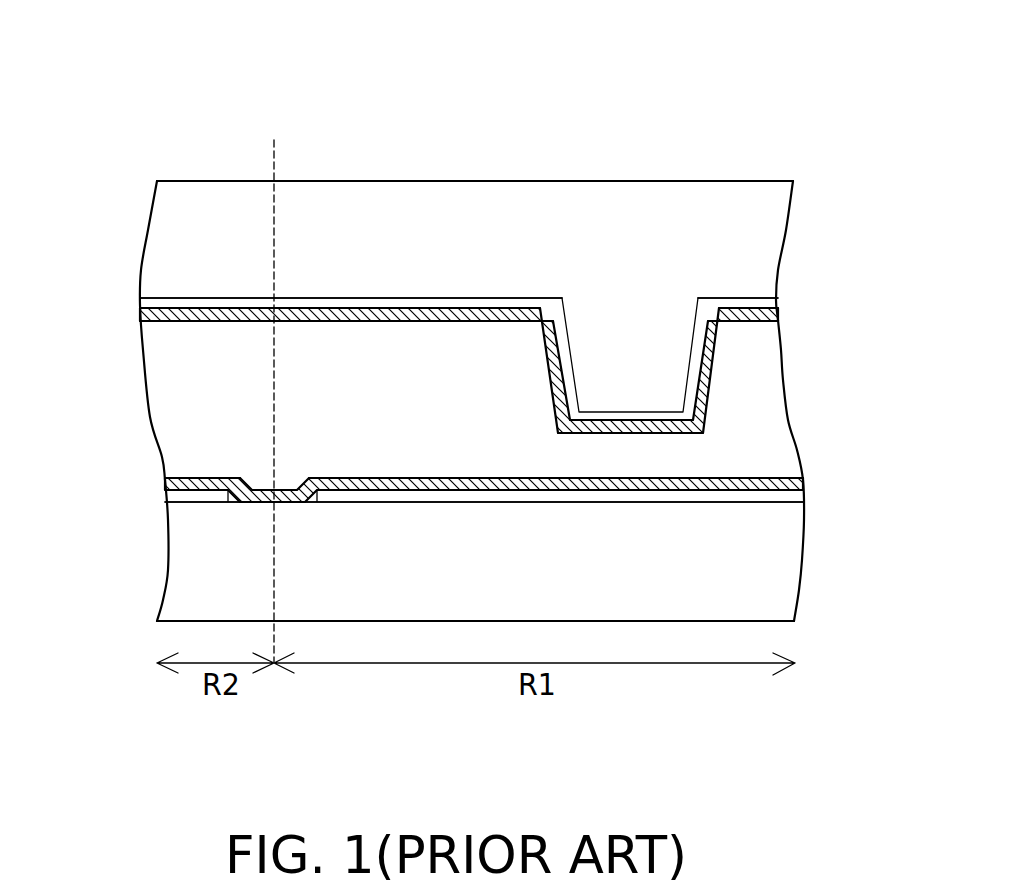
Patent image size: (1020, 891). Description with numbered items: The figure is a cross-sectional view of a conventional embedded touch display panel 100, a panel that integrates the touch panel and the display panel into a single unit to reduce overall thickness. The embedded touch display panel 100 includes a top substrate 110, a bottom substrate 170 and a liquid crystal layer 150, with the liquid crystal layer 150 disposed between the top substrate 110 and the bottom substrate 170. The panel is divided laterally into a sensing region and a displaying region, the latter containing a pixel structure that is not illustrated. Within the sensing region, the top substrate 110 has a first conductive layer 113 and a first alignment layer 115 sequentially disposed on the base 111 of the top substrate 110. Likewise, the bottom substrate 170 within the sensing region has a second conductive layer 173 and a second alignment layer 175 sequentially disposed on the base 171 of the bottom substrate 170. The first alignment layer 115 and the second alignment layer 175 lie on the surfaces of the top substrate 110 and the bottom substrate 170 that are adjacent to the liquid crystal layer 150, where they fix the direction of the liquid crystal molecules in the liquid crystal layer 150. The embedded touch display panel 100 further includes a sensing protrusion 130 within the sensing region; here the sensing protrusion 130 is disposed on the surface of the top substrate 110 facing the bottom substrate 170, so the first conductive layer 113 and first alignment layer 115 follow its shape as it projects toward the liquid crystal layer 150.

The embedded touch display panel 100 is at (910, 45).
The top substrate 110 is at (120, 180).
The base of the top substrate 111 is at (773, 243).
The first conductive layer 113 is at (755, 302).
The first alignment layer 115 is at (772, 315).
The sensing protrusion 130 is at (630, 307).
The liquid crystal layer 150 is at (783, 395).
The bottom substrate 170 is at (120, 478).
The base of the bottom substrate 171 is at (795, 558).
The second conductive layer 173 is at (785, 499).
The second alignment layer 175 is at (805, 482).